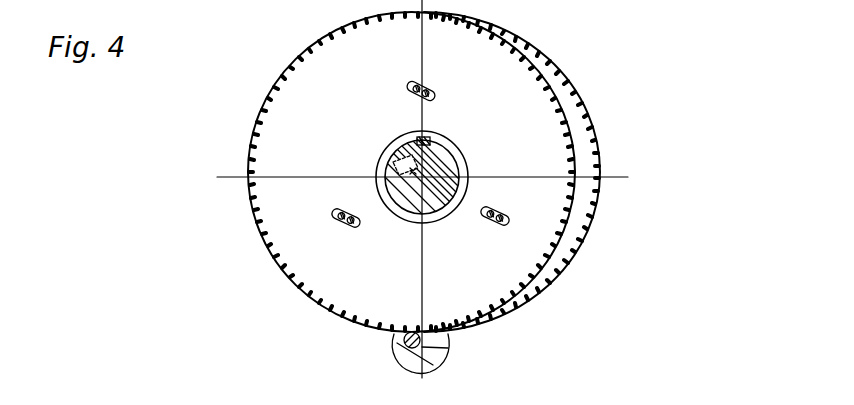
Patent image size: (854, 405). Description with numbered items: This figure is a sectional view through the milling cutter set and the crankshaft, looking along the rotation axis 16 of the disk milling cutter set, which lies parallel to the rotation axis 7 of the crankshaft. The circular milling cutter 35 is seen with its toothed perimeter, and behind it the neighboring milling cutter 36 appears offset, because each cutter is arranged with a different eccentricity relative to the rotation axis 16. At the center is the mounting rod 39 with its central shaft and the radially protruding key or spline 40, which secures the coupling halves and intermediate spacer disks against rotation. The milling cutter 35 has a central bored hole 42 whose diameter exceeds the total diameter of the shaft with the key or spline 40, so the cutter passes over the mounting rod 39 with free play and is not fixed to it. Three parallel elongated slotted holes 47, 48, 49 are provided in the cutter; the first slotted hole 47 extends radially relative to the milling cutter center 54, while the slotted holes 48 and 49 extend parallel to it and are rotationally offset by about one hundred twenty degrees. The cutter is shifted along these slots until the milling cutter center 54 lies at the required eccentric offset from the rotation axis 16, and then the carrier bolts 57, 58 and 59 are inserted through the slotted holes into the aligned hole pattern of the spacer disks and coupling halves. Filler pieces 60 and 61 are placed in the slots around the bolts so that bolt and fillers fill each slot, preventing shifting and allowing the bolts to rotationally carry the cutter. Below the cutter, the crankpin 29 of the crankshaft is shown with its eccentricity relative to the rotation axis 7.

The rotation axis of the crankshaft 7 is at (450, 352).
The rotation axis of the milling cutter set 16 is at (472, 195).
The crankpin 29 is at (400, 340).
The milling cutter 35 is at (265, 153).
The milling cutter 36 is at (555, 72).
The mounting rod 39 is at (455, 150).
The key or spline 40 is at (419, 137).
The central bored hole 42 is at (406, 222).
The elongated slotted hole 47 is at (578, 204).
The elongated slotted hole 48 is at (357, 67).
The elongated slotted hole 49 is at (273, 240).
The milling cutter center 54 is at (392, 150).
The carrier bolt 57 is at (441, 72).
The carrier bolt 58 is at (345, 228).
The carrier bolt 59 is at (498, 214).
The filler piece 60 is at (412, 86).
The filler piece 61 is at (356, 228).